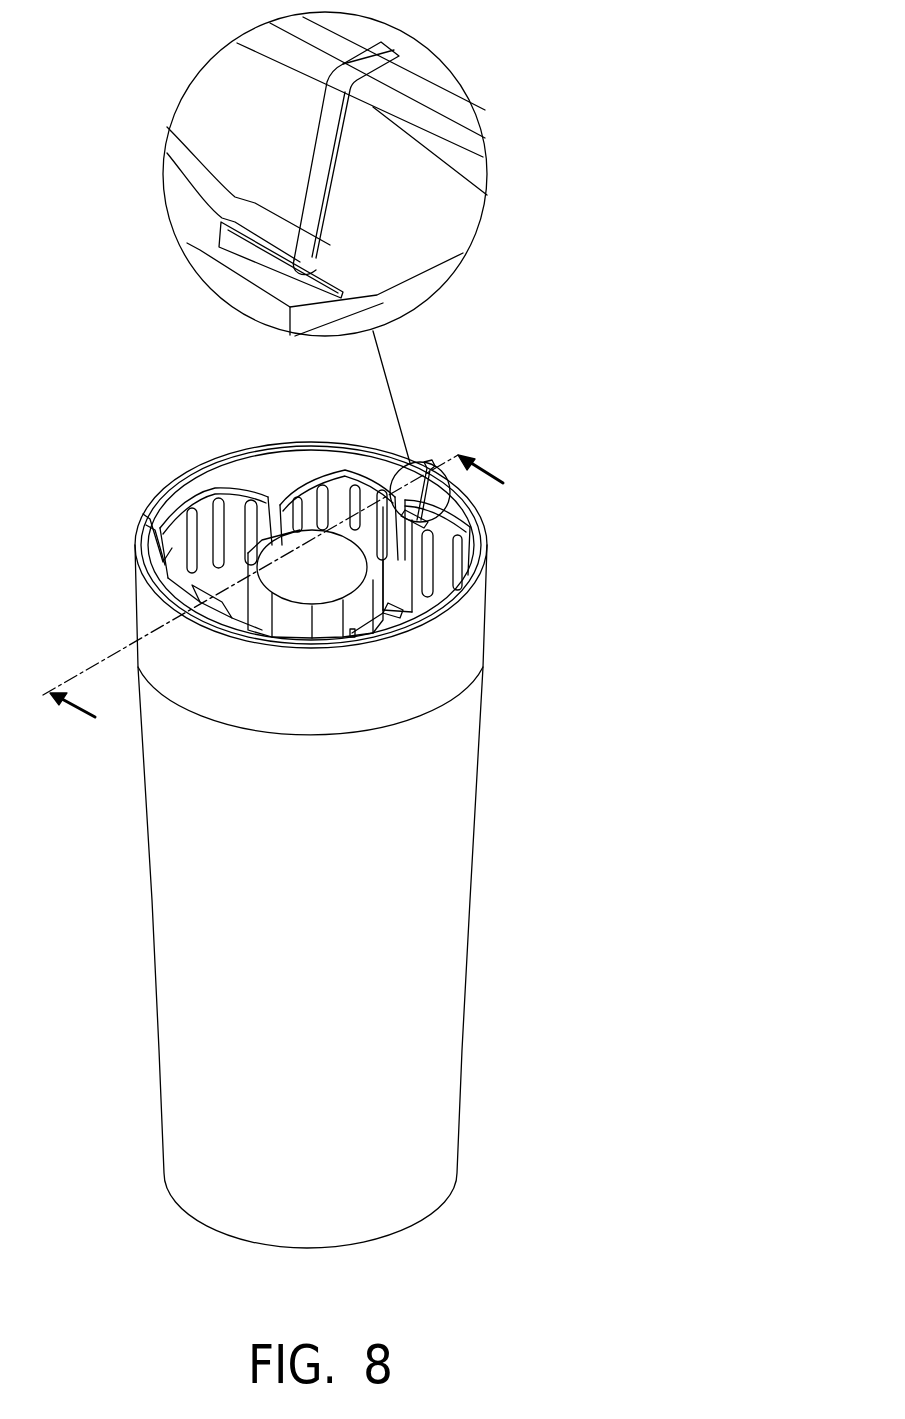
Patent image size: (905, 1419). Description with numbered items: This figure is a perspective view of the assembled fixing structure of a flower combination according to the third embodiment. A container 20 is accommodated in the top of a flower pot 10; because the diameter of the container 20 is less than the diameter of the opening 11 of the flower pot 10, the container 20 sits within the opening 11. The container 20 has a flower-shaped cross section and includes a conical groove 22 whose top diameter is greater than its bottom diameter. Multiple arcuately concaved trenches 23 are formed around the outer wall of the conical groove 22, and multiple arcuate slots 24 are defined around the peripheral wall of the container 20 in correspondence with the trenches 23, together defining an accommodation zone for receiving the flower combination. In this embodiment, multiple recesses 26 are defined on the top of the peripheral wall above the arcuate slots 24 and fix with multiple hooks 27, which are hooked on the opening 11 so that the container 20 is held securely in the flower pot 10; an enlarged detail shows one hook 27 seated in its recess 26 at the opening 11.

The flower pot 10 is at (463, 993).
The opening 11 is at (223, 477).
The container 20 is at (467, 547).
The conical groove 22 is at (240, 537).
The arcuately concaved trench 23 is at (273, 548).
The arcuate slot 24 is at (337, 487).
The recess 26 is at (417, 518).
The hook 27 is at (418, 512).